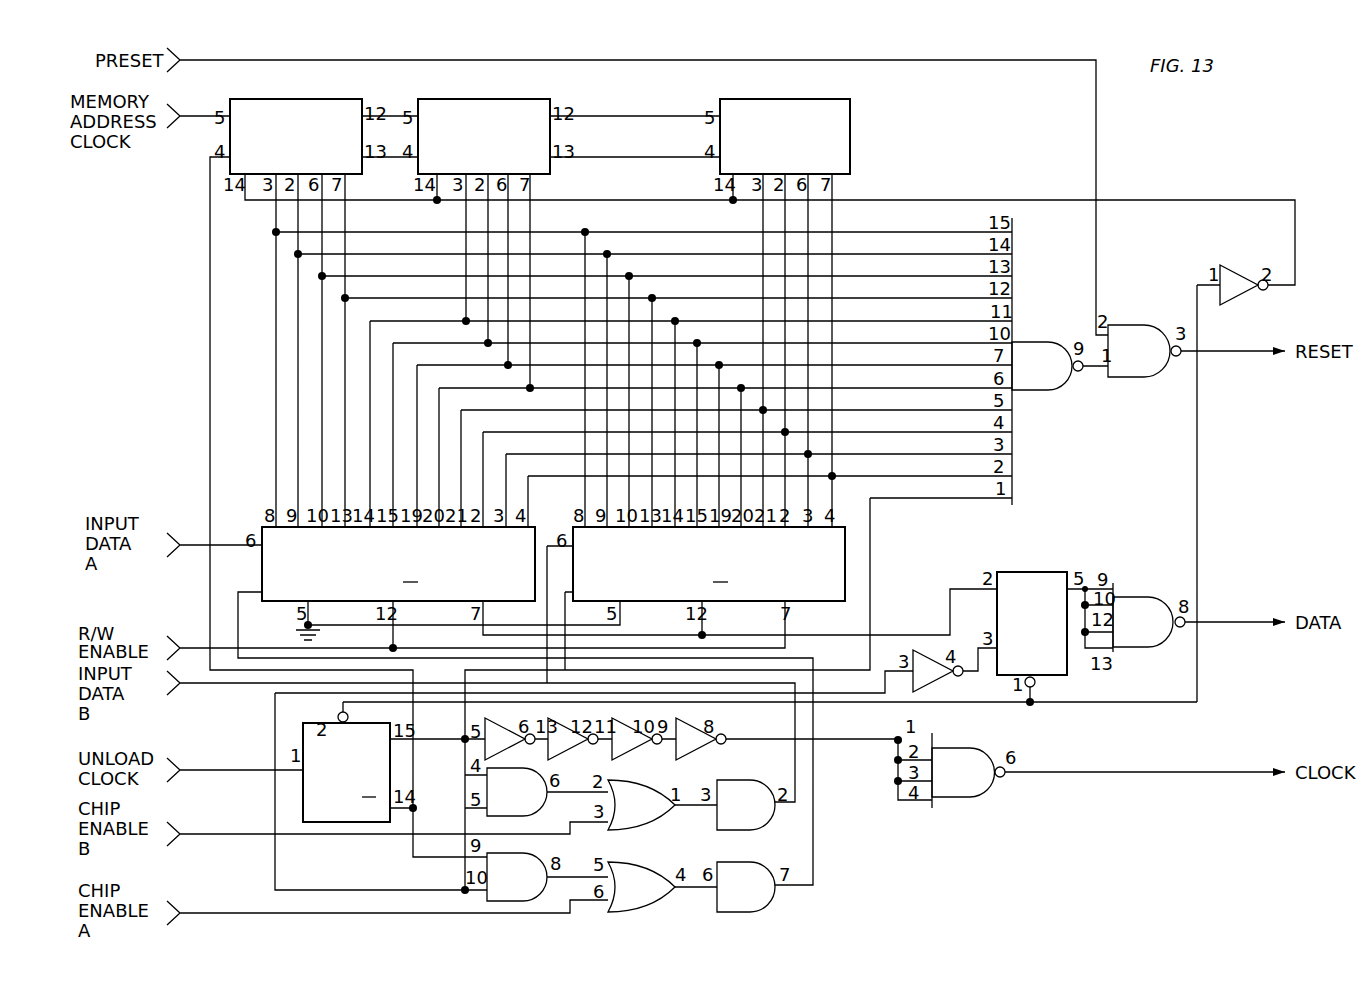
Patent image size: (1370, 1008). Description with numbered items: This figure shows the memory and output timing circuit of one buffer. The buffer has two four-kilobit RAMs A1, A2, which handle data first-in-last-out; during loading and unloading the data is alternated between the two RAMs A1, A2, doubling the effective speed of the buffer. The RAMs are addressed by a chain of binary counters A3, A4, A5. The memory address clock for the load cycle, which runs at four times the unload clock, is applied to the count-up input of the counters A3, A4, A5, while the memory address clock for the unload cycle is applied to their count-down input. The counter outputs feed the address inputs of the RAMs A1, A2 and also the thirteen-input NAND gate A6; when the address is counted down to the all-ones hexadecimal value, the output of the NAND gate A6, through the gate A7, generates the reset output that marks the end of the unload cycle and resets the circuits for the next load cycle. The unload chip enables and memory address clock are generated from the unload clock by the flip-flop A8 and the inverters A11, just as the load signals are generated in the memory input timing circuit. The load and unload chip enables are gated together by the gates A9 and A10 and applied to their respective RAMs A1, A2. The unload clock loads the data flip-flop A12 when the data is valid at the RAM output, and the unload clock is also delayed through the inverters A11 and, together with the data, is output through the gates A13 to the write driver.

The 4K RAM A1 is at (404, 564).
The 4K RAM A2 is at (715, 564).
The binary counter A3 is at (296, 136).
The binary counter A4 is at (484, 136).
The binary counter A5 is at (785, 136).
The 13 input NAND gate A6 is at (1047, 353).
The NAND gate A7 is at (834, 601).
The flip-flop A8 is at (346, 767).
The OR gate A9 is at (641, 836).
The AND gate A10 is at (746, 834).
The inverter A11 is at (876, 502).
The data flip-flop A12 is at (1032, 629).
The NAND gate A13 is at (1058, 685).